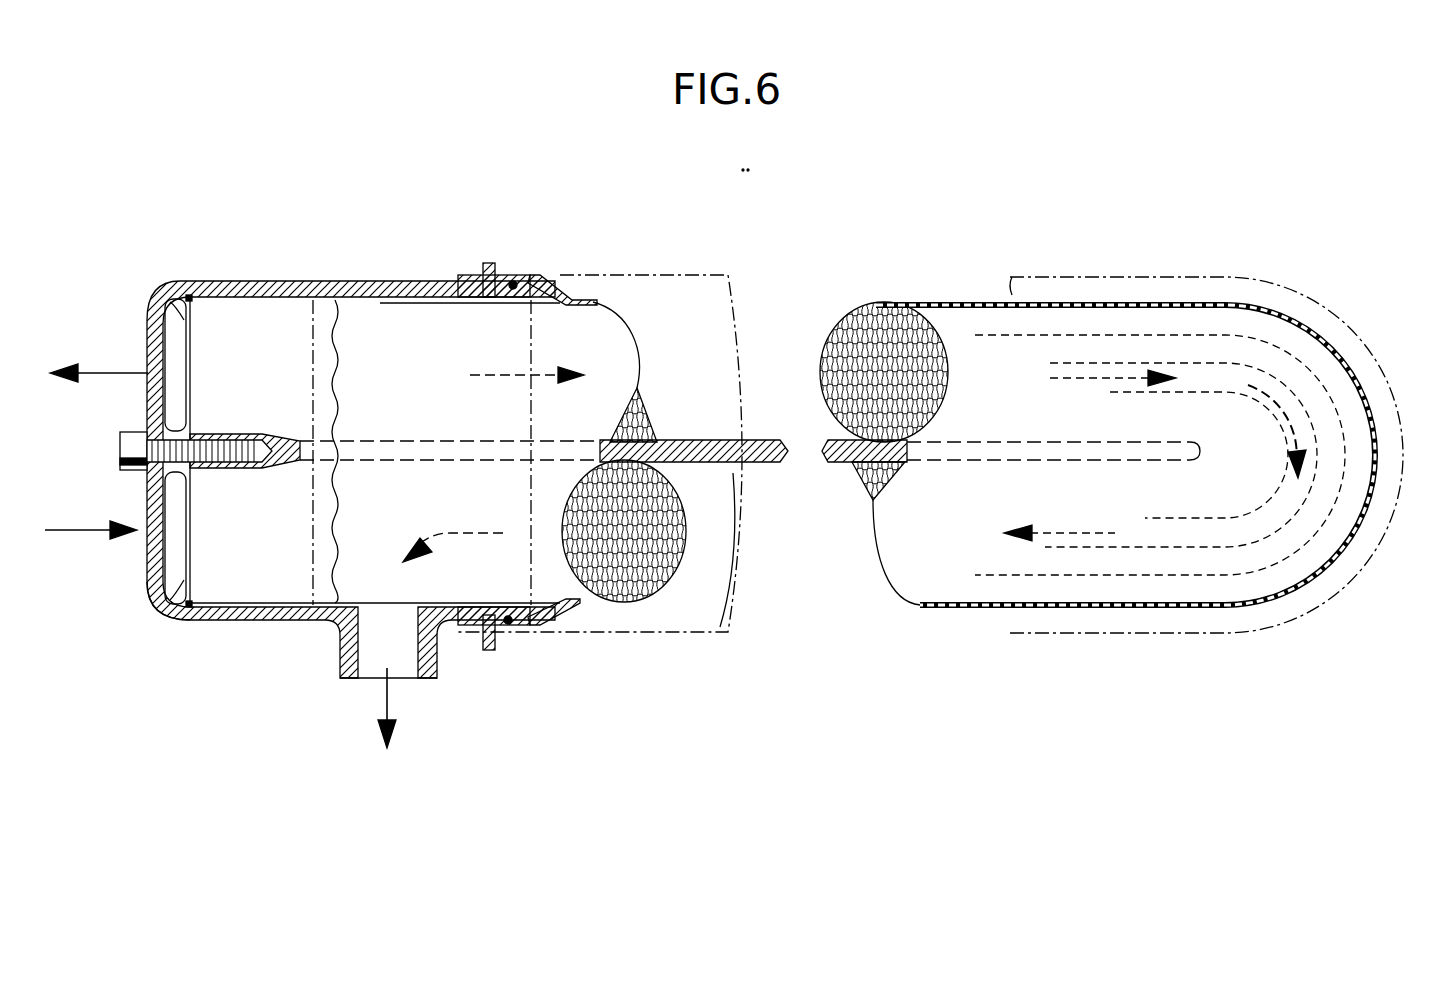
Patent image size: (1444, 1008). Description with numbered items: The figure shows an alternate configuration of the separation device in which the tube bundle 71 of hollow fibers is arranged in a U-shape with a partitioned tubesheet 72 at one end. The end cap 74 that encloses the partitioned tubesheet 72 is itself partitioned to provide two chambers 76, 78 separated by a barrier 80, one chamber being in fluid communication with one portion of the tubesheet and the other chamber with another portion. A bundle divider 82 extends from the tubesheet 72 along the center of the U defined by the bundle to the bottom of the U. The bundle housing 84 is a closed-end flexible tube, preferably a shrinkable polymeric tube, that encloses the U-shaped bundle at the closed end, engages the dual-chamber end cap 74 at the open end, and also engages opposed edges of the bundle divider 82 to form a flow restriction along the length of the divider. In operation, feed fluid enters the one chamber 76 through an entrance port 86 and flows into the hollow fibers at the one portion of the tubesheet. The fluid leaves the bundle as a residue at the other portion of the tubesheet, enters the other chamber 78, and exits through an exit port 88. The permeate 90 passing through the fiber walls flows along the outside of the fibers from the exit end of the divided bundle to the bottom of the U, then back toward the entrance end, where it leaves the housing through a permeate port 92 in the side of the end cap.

The tube bundle 71 is at (1237, 347).
The partitioned tubesheet 72 is at (265, 320).
The end cap 74 is at (165, 620).
The chamber 76 is at (175, 565).
The chamber 78 is at (176, 325).
The barrier 80 is at (152, 494).
The bundle divider 82 is at (832, 443).
The bundle housing 84 is at (960, 303).
The entrance port 86 is at (150, 538).
The exit port 88 is at (152, 380).
The permeate 90 is at (545, 370).
The permeate port 92 is at (370, 678).